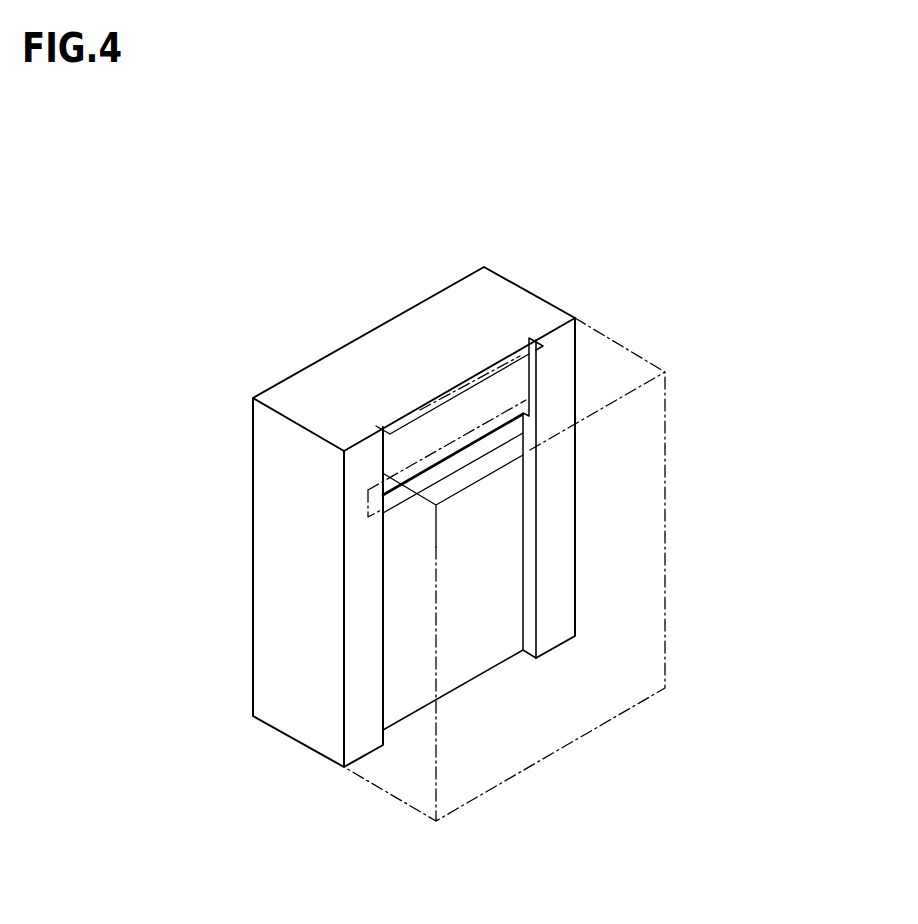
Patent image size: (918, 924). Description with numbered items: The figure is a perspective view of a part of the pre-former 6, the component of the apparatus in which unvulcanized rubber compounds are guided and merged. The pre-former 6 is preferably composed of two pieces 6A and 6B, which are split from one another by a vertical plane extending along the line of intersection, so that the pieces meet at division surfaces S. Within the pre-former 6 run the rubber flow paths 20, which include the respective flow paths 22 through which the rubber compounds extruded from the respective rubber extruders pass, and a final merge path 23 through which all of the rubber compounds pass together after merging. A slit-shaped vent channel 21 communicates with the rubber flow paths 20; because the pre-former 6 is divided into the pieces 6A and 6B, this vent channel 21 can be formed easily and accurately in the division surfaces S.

The pre-former 6 is at (576, 227).
The piece of the pre-former 6A is at (518, 283).
The piece of the pre-former 6B is at (593, 329).
The rubber flow paths 20 is at (577, 623).
The vent channel 21 is at (410, 414).
The flow paths 22 is at (473, 450).
The final merge path 23 is at (402, 690).
The division surfaces S is at (555, 545).